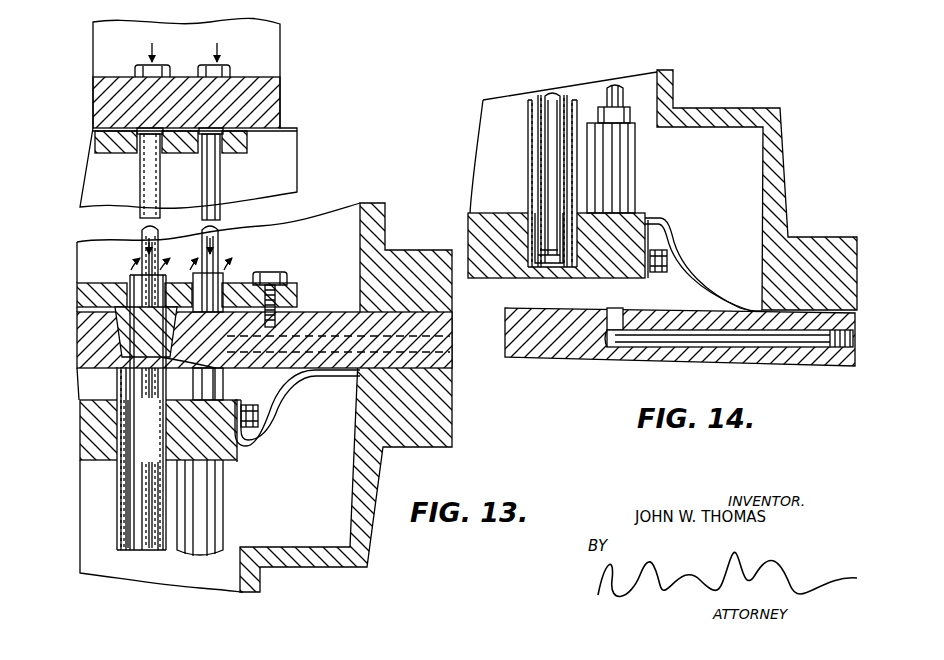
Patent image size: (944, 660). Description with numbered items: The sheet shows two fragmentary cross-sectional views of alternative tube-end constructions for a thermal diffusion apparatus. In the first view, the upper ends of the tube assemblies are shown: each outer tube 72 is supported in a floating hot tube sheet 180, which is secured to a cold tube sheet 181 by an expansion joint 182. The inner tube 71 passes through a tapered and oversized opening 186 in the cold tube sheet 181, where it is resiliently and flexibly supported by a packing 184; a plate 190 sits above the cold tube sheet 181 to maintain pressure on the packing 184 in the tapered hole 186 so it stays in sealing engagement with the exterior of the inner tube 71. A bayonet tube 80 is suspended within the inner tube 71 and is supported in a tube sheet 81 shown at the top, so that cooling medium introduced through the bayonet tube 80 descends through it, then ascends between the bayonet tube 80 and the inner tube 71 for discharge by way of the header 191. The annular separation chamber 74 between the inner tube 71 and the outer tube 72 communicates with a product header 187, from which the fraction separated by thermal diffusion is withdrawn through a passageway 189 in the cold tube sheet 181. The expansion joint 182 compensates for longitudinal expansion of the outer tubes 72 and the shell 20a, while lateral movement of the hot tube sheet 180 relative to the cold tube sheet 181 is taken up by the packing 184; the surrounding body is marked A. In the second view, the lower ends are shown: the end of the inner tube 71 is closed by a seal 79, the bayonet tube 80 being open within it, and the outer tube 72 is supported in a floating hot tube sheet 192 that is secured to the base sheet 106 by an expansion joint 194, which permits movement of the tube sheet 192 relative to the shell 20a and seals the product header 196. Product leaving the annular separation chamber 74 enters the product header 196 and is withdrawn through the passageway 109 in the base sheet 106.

In FIG. 13, the tube sheet 81 is at (255, 90).
In FIG. 13, the bayonet tube 80 is at (201, 193).
In FIG. 14, the bayonet tube 80 is at (607, 90).
In FIG. 13, the header 191 is at (180, 238).
In FIG. 13, the inner tube 71 is at (224, 275).
In FIG. 14, the inner tube 71 is at (540, 108).
In FIG. 13, the plate 190 is at (230, 287).
In FIG. 13, the packing 184 is at (128, 263).
In FIG. 13, the passageway 189 is at (318, 330).
In FIG. 13, the product header 187 is at (130, 380).
In FIG. 13, the tapered oversized opening 186 is at (222, 371).
In FIG. 13, the cold tube sheet 181 is at (296, 369).
In FIG. 13, the expansion joint 182 is at (296, 420).
In FIG. 13, the floating hot tube sheet 180 is at (220, 452).
In FIG. 13, the annular separation chamber 74 is at (126, 486).
In FIG. 14, the annular separation chamber 74 is at (537, 157).
In FIG. 13, the outer tube 72 is at (120, 522).
In FIG. 14, the outer tube 72 is at (532, 140).
In FIG. 13, the frame block A is at (352, 572).
In FIG. 14, the shell 20a is at (673, 80).
In FIG. 14, the product header 196 is at (640, 305).
In FIG. 14, the seal 79 is at (553, 268).
In FIG. 14, the floating hot tube sheet 192 is at (640, 214).
In FIG. 14, the expansion joint 194 is at (677, 243).
In FIG. 14, the base sheet 106 is at (590, 348).
In FIG. 14, the passageway 109 is at (773, 347).